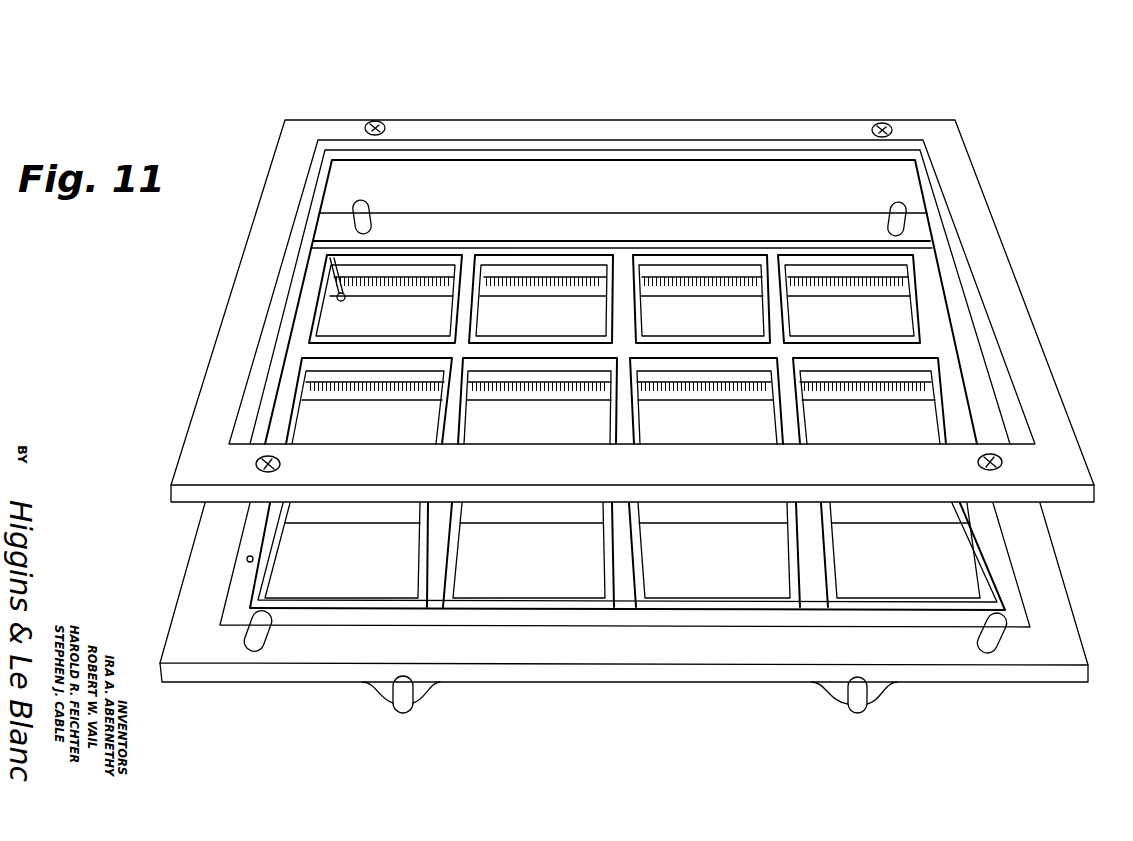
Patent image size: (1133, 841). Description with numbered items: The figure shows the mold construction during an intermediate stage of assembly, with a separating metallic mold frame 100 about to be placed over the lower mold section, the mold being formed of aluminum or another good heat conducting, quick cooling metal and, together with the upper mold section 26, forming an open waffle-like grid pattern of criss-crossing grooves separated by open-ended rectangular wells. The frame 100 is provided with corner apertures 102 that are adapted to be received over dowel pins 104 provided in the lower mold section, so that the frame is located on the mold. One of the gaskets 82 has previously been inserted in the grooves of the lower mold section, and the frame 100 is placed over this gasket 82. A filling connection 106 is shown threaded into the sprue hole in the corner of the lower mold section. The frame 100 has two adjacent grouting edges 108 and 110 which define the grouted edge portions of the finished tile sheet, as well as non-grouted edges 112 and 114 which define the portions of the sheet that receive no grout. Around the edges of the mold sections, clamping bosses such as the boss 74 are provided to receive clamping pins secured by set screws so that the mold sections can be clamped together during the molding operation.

The separating metallic mold frame 100 is at (708, 124).
The grouting edge 110 is at (548, 142).
The grouting edge 108 is at (283, 288).
The non-grouted edge 112 is at (963, 275).
The non-grouted edge 114 is at (870, 447).
The filling connection 106 is at (345, 300).
The corner aperture 102 is at (378, 122).
The dowel pin 104 is at (372, 208).
The upper mold section 26 is at (664, 645).
The gasket 82 is at (440, 551).
The clamping boss 74 is at (873, 698).